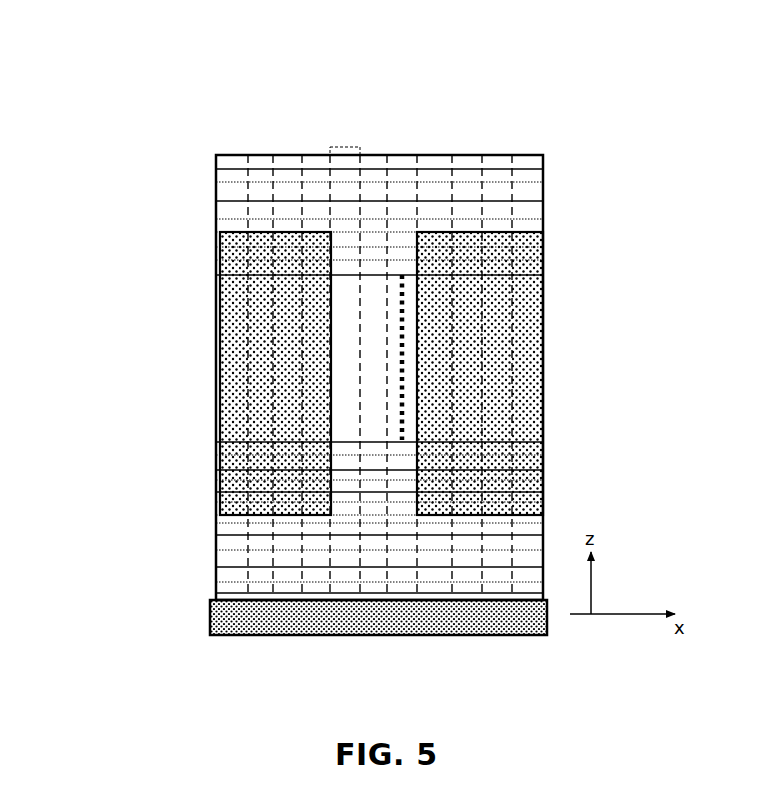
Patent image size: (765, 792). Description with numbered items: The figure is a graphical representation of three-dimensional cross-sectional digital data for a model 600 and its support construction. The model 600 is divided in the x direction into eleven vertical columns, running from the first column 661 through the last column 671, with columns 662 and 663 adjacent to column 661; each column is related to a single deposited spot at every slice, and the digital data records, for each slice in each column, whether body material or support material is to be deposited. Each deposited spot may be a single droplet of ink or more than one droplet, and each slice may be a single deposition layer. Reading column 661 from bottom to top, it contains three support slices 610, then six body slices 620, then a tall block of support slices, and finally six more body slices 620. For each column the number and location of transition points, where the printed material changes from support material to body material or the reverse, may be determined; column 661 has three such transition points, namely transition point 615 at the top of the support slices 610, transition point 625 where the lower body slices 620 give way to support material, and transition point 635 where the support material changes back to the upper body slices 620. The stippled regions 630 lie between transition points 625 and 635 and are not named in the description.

The model 600 is at (155, 126).
The support slices 610 is at (210, 620).
The transition point 615 is at (210, 597).
The body slices 620 is at (235, 566).
The transition point 625 is at (215, 517).
The contact regions 630 is at (240, 348).
The transition point 635 is at (215, 233).
The column 661 is at (232, 160).
The column 662 is at (262, 158).
The column 663 is at (293, 158).
The column 671 is at (348, 85).